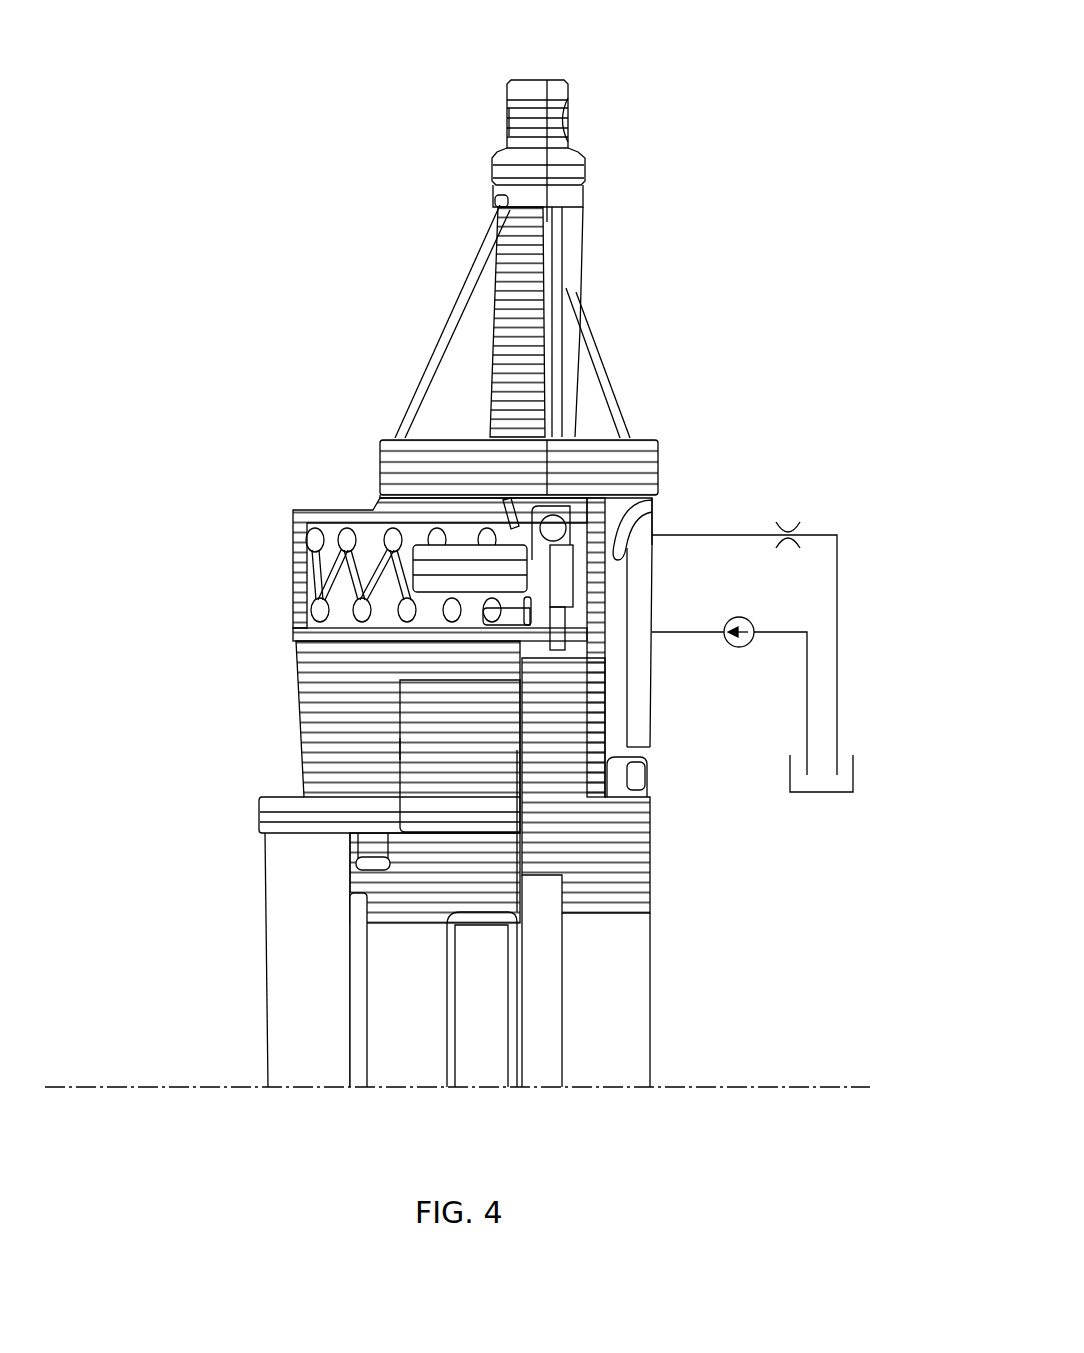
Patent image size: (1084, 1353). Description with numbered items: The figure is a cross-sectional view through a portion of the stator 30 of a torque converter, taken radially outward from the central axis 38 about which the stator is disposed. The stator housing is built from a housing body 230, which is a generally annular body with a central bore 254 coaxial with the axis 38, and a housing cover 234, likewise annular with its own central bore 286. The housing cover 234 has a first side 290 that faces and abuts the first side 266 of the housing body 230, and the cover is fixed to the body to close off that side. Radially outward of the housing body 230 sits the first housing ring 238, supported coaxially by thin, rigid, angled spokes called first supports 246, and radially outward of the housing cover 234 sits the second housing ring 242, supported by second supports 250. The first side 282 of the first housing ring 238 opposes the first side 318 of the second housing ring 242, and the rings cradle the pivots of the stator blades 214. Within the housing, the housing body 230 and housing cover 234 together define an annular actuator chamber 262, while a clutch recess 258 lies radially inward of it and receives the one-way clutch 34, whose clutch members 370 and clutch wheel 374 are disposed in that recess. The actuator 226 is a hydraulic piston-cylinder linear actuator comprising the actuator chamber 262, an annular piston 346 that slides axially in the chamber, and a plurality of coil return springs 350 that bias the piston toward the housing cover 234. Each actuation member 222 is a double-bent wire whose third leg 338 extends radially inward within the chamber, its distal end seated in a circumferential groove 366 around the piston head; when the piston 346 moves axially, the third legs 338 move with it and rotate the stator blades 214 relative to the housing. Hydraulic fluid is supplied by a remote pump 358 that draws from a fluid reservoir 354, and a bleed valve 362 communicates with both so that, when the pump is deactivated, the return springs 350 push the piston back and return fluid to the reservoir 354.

The stator 30 is at (230, 192).
The one-way clutch 34 is at (405, 933).
The central axis 38 is at (805, 1083).
The stator blades 214 is at (556, 270).
The actuation members 222 is at (578, 525).
The actuator 226 is at (870, 550).
The housing body 230 is at (322, 675).
The housing cover 234 is at (620, 860).
The first housing ring 238 is at (520, 105).
The second housing ring 242 is at (557, 92).
The first supports 246 is at (459, 287).
The second supports 250 is at (602, 357).
The central bore 254 is at (288, 937).
The clutch recess 258 is at (400, 738).
The actuator chamber 262 is at (438, 508).
The first side 266 is at (548, 472).
The first side 282 is at (548, 148).
The central bore 286 is at (618, 1000).
The first side 290 is at (399, 815).
The first side 318 is at (547, 103).
The third leg 338 is at (572, 580).
The piston 346 is at (490, 525).
The return springs 350 is at (352, 585).
The fluid reservoir 354 is at (857, 770).
The pump 358 is at (738, 648).
The bleed valve 362 is at (795, 520).
The circumferential groove 366 is at (565, 605).
The clutch members 370 is at (420, 732).
The clutch wheel 374 is at (478, 870).